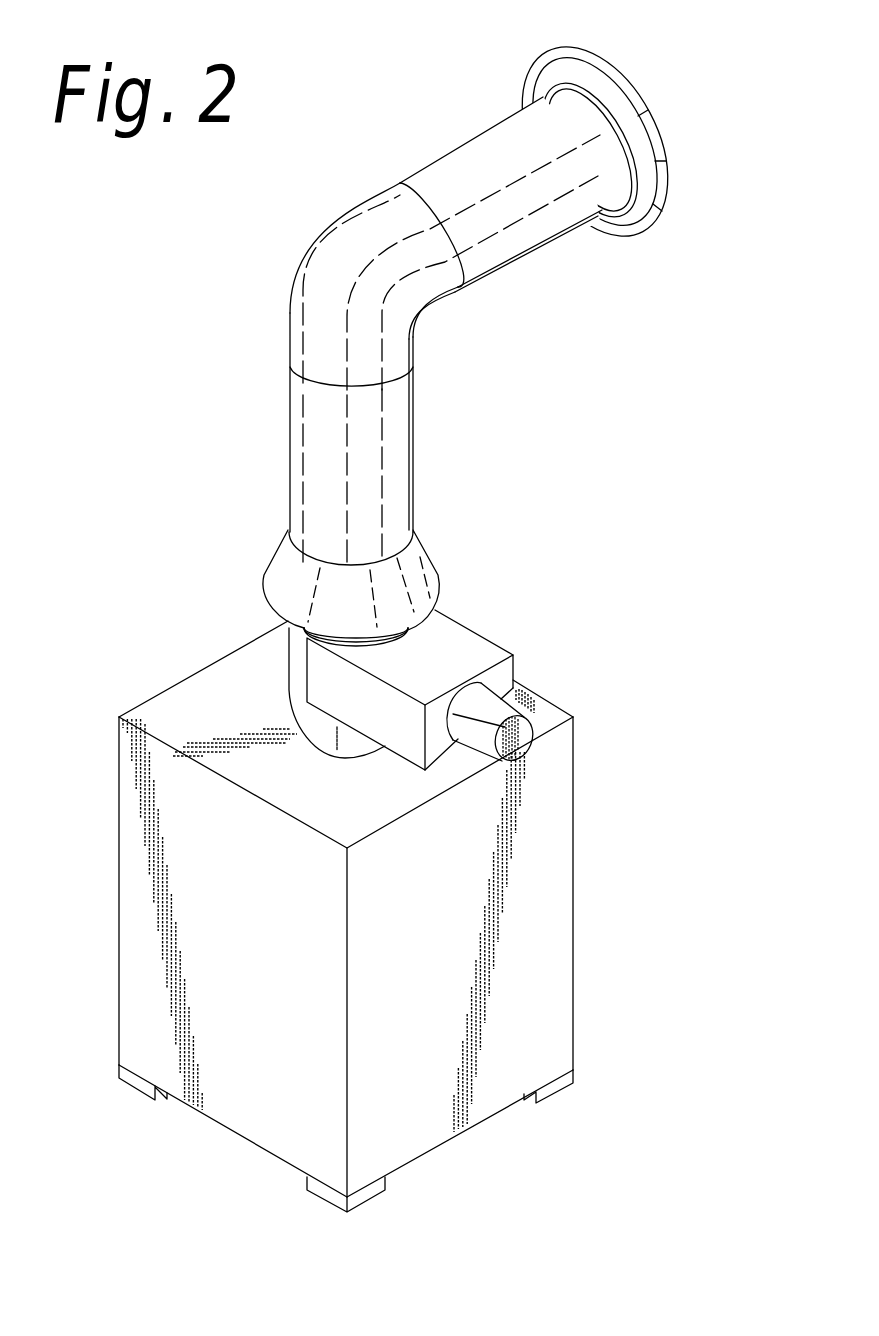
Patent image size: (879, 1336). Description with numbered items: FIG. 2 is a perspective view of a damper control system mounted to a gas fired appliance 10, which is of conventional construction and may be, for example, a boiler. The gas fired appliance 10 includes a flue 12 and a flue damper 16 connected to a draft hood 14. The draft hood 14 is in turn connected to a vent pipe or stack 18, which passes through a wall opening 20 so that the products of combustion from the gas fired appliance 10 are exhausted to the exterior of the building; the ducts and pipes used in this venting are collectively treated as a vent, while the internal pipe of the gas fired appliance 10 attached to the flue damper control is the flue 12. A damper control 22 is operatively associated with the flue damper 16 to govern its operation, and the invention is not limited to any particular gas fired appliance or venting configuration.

The gas fired appliance 10 is at (612, 848).
The flue 12 is at (298, 718).
The draft hood 14 is at (412, 572).
The flue damper 16 is at (442, 632).
The vent pipe or stack 18 is at (467, 340).
The wall opening 20 is at (614, 222).
The damper control 22 is at (522, 732).